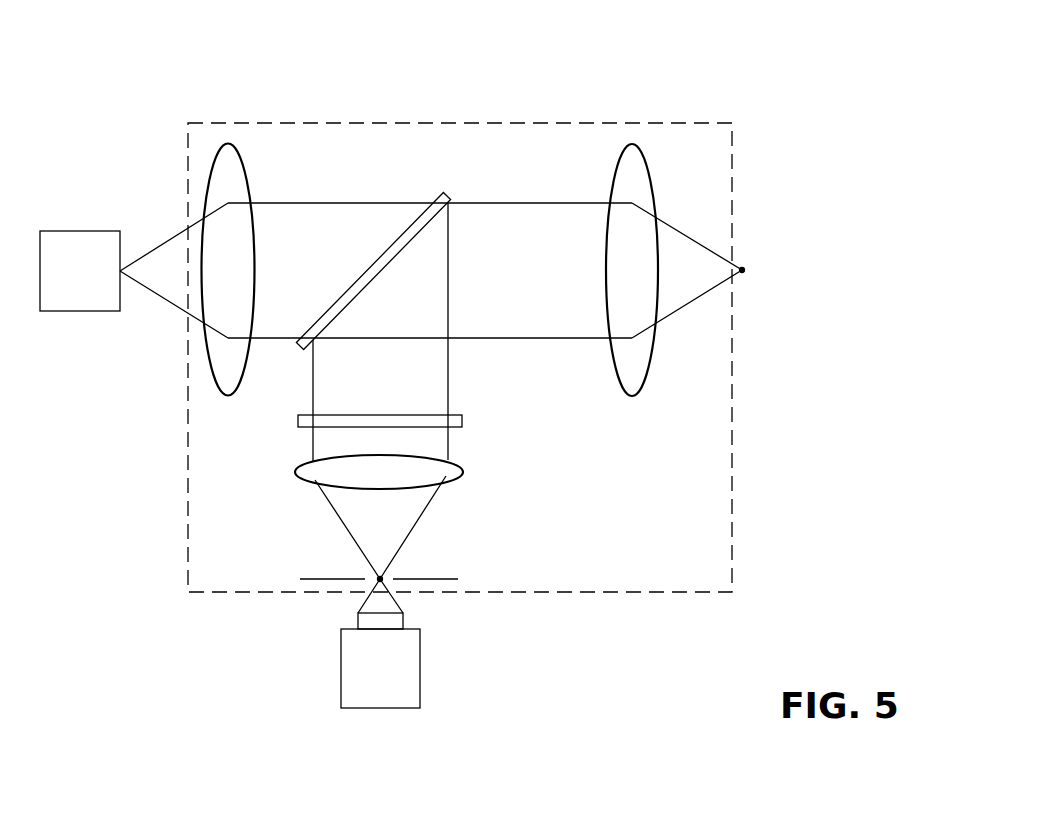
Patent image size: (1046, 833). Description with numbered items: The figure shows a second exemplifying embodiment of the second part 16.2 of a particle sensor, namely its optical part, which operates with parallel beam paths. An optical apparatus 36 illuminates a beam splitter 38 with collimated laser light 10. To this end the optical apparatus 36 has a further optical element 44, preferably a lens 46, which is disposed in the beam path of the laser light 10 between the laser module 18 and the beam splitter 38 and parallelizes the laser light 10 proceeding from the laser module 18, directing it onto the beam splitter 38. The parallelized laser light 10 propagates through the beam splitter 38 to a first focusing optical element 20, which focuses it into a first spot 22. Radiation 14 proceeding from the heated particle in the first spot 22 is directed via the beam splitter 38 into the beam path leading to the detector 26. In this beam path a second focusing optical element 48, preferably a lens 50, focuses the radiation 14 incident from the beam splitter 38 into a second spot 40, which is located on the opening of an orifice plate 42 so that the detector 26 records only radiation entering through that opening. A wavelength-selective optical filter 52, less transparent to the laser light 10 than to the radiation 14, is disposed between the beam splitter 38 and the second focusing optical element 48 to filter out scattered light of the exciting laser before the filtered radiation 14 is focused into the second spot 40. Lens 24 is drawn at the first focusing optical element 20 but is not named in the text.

The second part 16.2 is at (153, 104).
The optical apparatus 36 is at (656, 115).
The laser light 10 is at (350, 202).
The beam splitter 38 is at (458, 188).
The first spot 22 is at (746, 270).
The laser module 18 is at (80, 313).
The lens 46 is at (199, 343).
The radiation 14 is at (449, 358).
The focusing lens 24 is at (665, 343).
The wavelength-selective optical filter 52 is at (463, 420).
The lens 50 is at (379, 514).
The further optical element 44 is at (228, 410).
The first focusing optical element 20 is at (632, 410).
The second focusing optical element 48 is at (300, 488).
The orifice plate 42 is at (432, 574).
The second spot 40 is at (378, 581).
The detector 26 is at (421, 667).